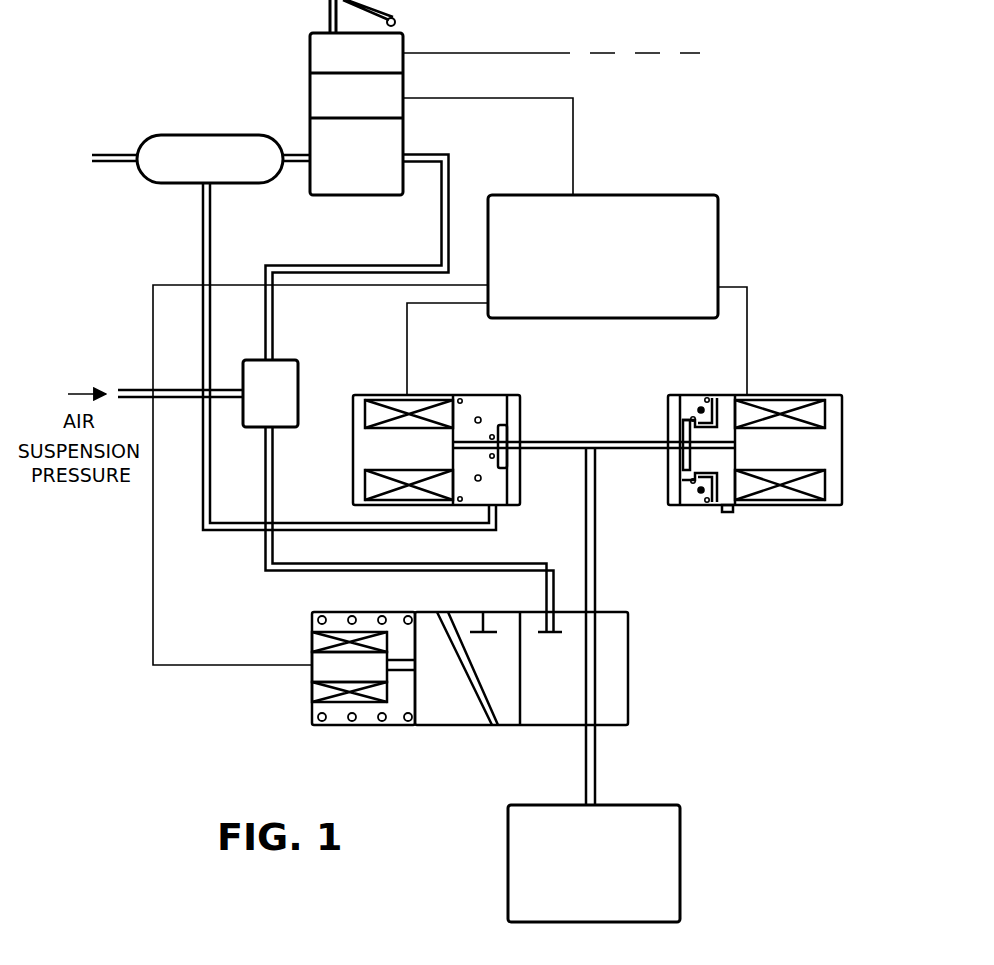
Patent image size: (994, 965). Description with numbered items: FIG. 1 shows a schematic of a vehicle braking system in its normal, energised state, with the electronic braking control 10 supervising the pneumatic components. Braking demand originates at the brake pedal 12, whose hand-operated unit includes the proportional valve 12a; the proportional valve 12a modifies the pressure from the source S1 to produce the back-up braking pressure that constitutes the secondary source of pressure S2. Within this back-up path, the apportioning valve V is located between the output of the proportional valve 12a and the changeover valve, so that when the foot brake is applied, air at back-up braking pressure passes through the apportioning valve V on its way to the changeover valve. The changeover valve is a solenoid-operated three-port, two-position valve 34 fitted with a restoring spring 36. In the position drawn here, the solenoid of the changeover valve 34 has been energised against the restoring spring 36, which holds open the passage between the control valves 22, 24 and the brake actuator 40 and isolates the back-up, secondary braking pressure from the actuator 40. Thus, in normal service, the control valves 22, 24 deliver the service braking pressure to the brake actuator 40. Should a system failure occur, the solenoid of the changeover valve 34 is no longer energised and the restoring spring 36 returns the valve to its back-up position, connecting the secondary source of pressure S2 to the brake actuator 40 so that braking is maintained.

The vehicle axle EBS control 10 is at (724, 224).
The brake pedal 12 is at (290, 127).
The proportional valve 12a is at (331, 168).
The source S1 is at (245, 183).
The secondary source of pressure S2 is at (458, 182).
The apportioning valve V is at (306, 391).
The control valve 22 is at (528, 419).
The control valve 24 is at (850, 442).
The 3/2 valve 34 is at (640, 669).
The restoring spring 36 is at (406, 726).
The brake actuator 40 is at (506, 893).